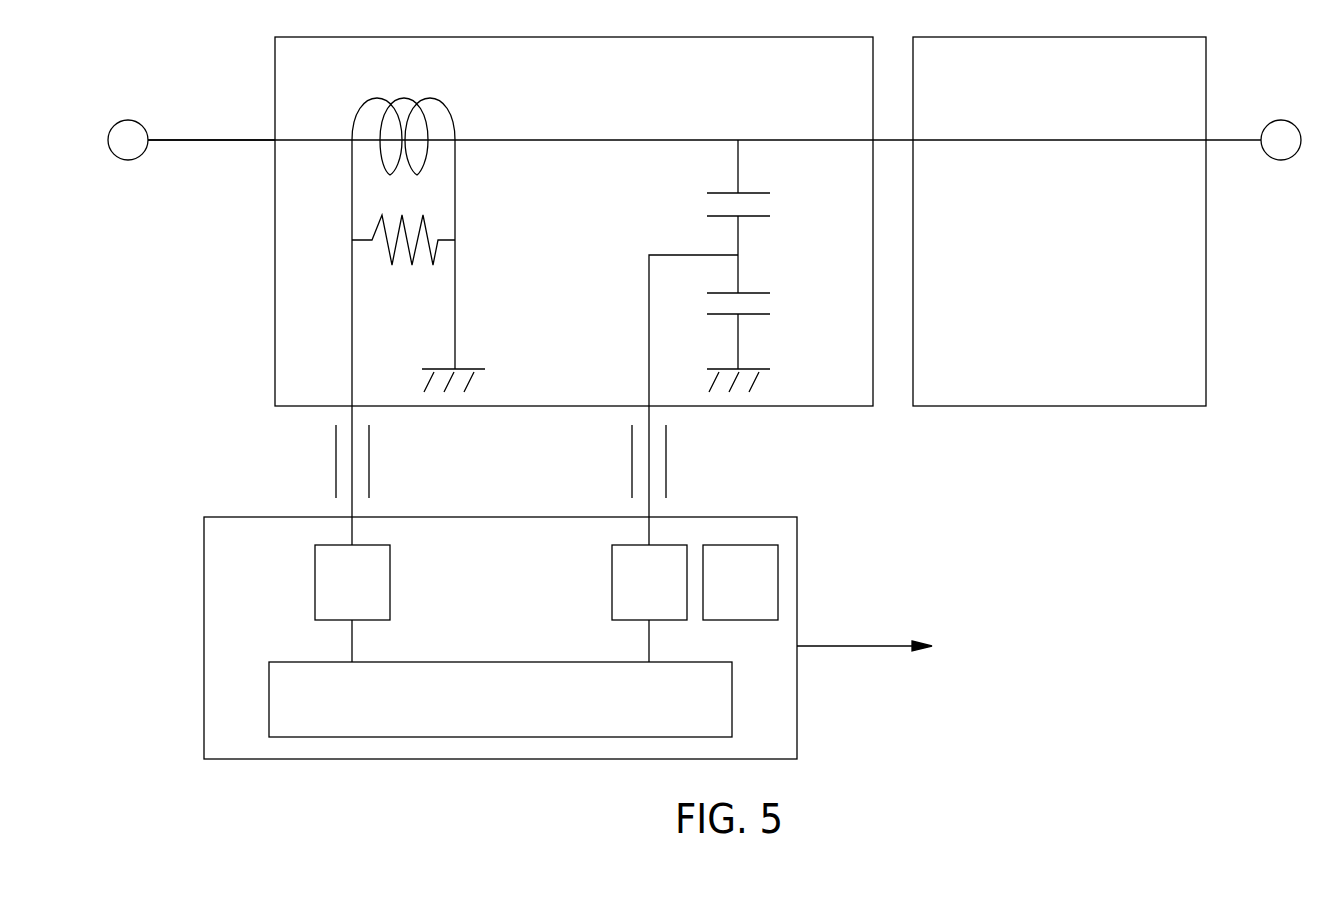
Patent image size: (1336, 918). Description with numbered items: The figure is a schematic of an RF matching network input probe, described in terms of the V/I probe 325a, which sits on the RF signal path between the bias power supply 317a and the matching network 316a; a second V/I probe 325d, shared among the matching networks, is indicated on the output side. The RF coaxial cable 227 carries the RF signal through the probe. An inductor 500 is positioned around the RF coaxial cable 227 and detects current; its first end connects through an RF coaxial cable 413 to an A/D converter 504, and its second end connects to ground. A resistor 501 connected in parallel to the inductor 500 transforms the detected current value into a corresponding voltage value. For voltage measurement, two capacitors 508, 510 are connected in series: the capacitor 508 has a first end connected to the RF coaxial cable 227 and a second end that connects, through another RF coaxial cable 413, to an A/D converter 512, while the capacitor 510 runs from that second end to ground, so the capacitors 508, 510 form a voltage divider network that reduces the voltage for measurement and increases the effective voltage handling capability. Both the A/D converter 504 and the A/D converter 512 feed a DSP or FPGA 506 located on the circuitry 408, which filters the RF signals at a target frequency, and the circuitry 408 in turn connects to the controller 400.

The RF coaxial cable 227 is at (222, 140).
The bias power supply 317a is at (128, 122).
The V/I probe 325a is at (597, 88).
The matching network 316a is at (1082, 88).
The V/I probe 325d is at (1286, 122).
The inductor 500 is at (374, 97).
The resistor 501 is at (433, 252).
The capacitor 508 is at (753, 193).
The capacitor 510 is at (753, 293).
The RF coaxial cable 413 is at (370, 461).
The A/D converter 504 is at (369, 592).
The A/D converter 512 is at (666, 592).
The circuitry 408 is at (757, 592).
The DSP or FPGA 506 is at (517, 708).
The controller 400 is at (897, 646).